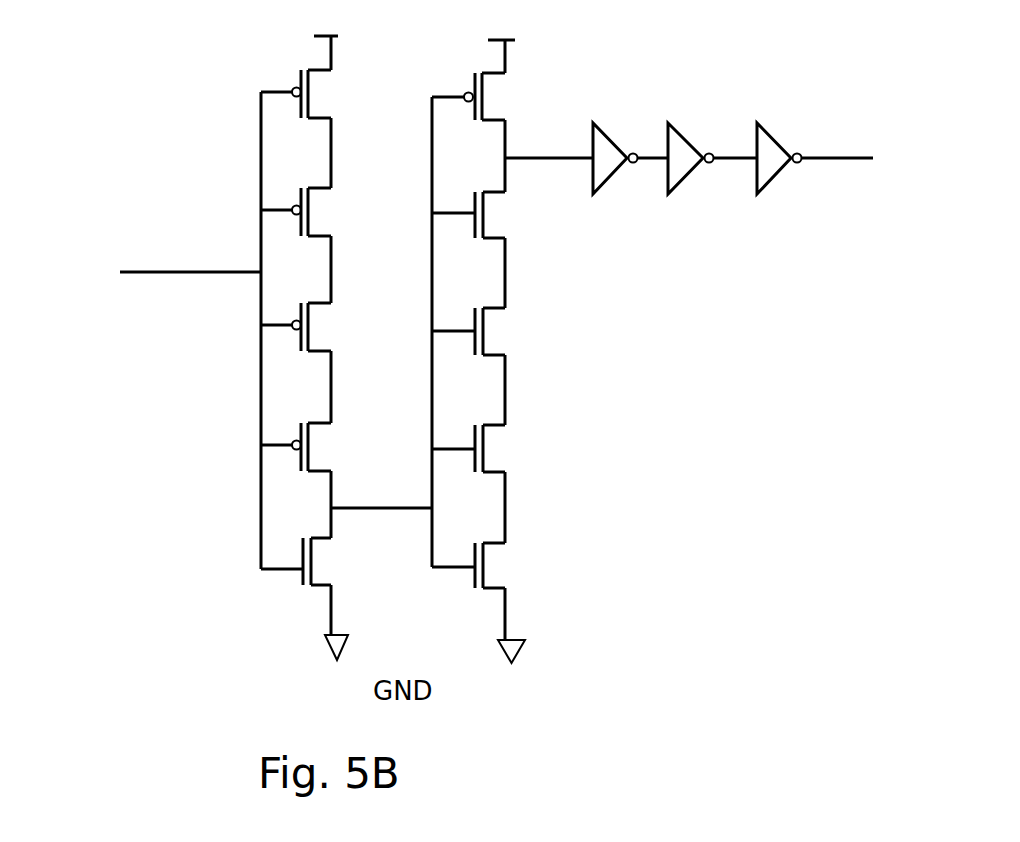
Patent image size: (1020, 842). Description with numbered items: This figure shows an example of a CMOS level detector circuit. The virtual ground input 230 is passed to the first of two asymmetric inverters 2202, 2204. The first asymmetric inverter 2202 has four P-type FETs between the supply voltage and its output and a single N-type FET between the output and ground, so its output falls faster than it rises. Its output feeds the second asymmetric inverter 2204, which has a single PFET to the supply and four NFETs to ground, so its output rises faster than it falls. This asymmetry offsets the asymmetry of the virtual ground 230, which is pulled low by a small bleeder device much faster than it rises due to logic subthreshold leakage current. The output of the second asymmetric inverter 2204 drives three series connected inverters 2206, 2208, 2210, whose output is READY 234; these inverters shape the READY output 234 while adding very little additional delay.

The first asymmetric inverter 2202 is at (346, 348).
The second asymmetric inverter 2204 is at (488, 351).
The series connected inverter 2206 is at (610, 133).
The series connected inverter 2208 is at (690, 133).
The series connected inverter 2210 is at (778, 130).
The virtual ground input 230 is at (144, 270).
The READY output 234 is at (863, 152).